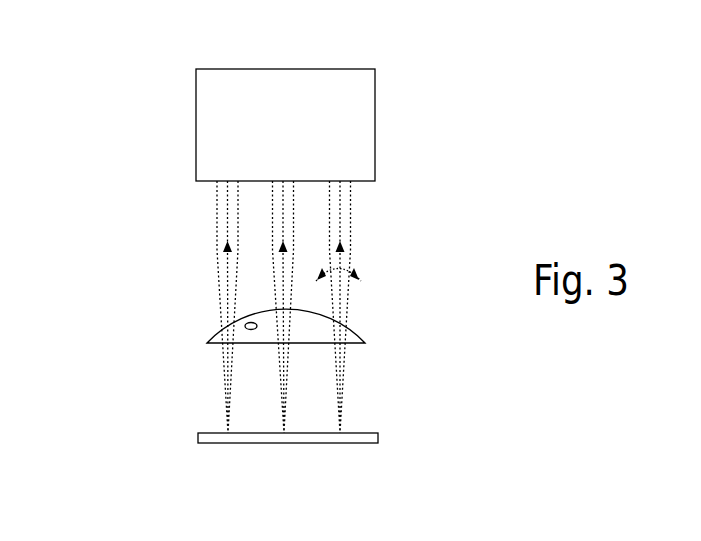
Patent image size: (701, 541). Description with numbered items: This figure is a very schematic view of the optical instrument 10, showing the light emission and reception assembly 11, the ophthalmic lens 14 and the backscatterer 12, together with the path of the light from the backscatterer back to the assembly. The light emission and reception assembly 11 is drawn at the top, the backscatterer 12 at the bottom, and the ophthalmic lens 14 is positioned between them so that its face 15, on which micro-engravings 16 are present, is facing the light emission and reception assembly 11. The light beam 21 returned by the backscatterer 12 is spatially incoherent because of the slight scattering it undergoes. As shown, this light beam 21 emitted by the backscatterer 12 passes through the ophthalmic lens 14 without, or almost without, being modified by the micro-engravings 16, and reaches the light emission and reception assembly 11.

The optical instrument 10 is at (105, 72).
The light emission and reception assembly 11 is at (300, 141).
The backscatterer 12 is at (312, 437).
The ophthalmic lens 14 is at (353, 338).
The face 15 is at (313, 308).
The micro-engravings 16 is at (246, 324).
The light beam 21 is at (240, 396).